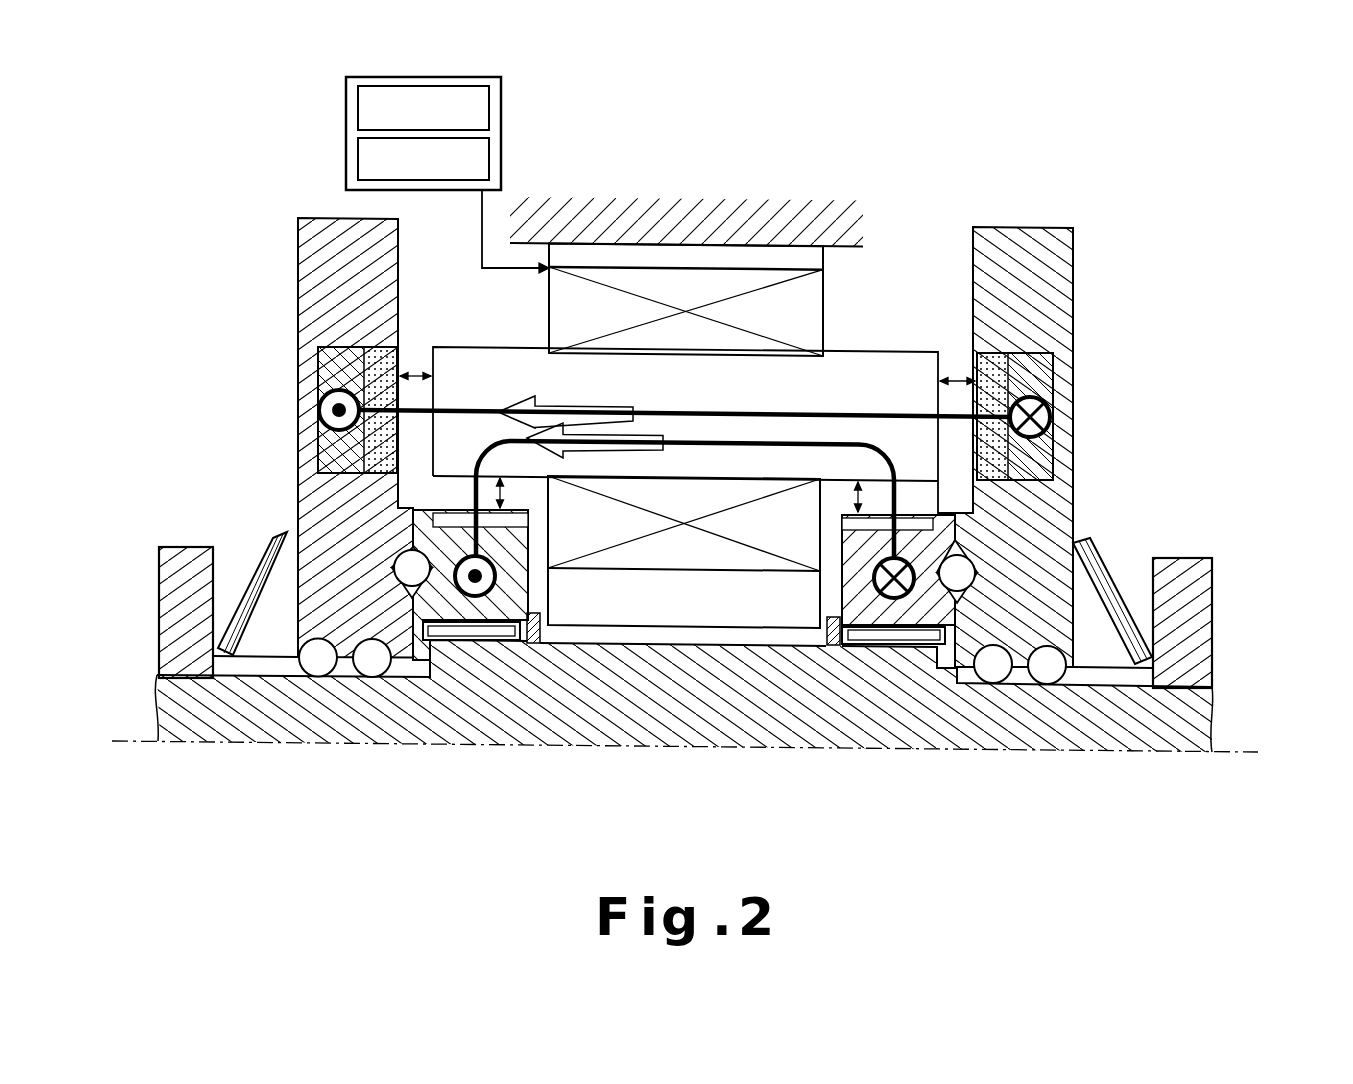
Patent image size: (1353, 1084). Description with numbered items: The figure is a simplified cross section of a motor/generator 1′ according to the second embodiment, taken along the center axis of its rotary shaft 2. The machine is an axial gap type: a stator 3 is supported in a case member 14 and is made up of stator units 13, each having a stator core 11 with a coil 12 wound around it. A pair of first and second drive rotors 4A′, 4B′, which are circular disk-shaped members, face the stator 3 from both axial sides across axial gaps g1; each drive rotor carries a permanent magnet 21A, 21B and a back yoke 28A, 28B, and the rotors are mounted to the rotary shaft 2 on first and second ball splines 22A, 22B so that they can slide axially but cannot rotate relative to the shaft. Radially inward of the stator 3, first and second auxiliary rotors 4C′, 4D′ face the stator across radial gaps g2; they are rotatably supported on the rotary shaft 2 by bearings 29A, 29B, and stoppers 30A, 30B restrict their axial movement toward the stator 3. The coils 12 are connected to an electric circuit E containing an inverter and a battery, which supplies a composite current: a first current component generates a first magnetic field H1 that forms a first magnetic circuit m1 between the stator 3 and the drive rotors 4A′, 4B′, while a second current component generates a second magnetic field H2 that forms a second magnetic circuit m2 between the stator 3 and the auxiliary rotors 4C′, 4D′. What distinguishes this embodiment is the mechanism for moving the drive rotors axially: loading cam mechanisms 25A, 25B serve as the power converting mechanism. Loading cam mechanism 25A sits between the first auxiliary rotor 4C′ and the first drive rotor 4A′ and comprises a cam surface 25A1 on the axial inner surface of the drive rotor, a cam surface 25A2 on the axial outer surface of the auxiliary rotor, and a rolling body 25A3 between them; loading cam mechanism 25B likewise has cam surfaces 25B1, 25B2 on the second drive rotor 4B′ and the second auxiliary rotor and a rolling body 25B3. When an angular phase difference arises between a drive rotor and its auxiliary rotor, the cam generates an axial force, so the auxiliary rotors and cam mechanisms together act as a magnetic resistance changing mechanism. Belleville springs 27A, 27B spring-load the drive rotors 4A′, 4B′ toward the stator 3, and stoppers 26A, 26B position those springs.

The motor/generator 1′ is at (688, 452).
The rotary shaft 2 is at (1120, 722).
The stator 3 is at (710, 357).
The first drive rotor 4A′ is at (358, 228).
The second drive rotor 4B′ is at (1025, 242).
The first auxiliary rotor 4C′ is at (458, 527).
The second auxiliary rotor 4D′ is at (917, 557).
The stator core 11 is at (643, 382).
The coil 12 is at (748, 285).
The stator unit 13 is at (685, 357).
The case member 14 is at (556, 214).
The permanent magnet 21A is at (302, 388).
The permanent magnet 21B is at (1075, 398).
The first ball spline 22A is at (317, 663).
The second ball spline 22B is at (1045, 670).
The loading cam mechanism 25A is at (271, 488).
The cam surface 25A1 is at (412, 568).
The cam surface 25A2 is at (407, 547).
The rolling body 25A3 is at (410, 590).
The loading cam mechanism 25B is at (1096, 495).
The cam surface 25B1 is at (960, 545).
The cam surface 25B2 is at (975, 580).
The rolling body 25B3 is at (965, 570).
The stopper 26A is at (167, 592).
The stopper 26B is at (1188, 607).
The Belleville spring 27A is at (263, 557).
The Belleville spring 27B is at (1100, 558).
The back yoke 28A is at (340, 368).
The back yoke 28B is at (1037, 383).
The bearing 29A is at (460, 640).
The bearing 29B is at (910, 647).
The stopper 30A is at (560, 644).
The stopper 30B is at (813, 645).
The electric circuit E is at (500, 112).
The axial gap g1 is at (418, 373).
The radial gap g2 is at (503, 492).
The first magnetic field H1 is at (552, 405).
The second magnetic field H2 is at (615, 433).
The first magnetic circuit m1 is at (780, 412).
The second magnetic circuit m2 is at (723, 437).